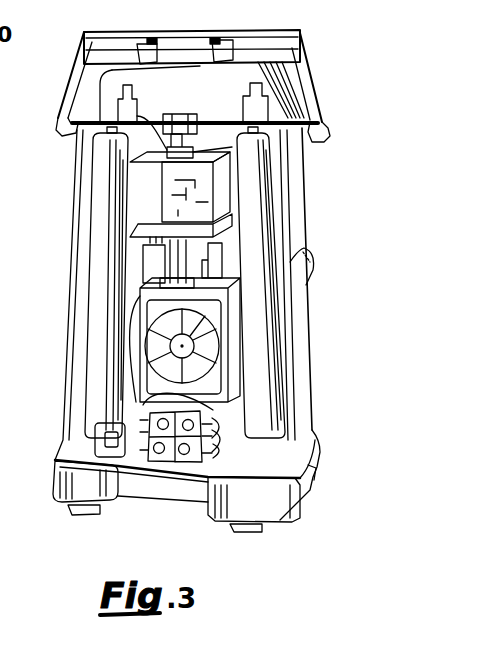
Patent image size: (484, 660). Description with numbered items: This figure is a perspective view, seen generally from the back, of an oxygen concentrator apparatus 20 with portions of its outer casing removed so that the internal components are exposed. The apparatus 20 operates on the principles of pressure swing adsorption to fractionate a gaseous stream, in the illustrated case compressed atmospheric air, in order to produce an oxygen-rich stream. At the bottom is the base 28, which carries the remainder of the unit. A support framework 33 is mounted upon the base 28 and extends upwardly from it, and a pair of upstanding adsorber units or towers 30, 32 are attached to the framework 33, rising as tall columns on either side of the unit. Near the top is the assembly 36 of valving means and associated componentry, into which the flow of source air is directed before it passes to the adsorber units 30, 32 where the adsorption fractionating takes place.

The apparatus 20 is at (322, 57).
The base 28 is at (312, 457).
The adsorber unit 30 is at (249, 202).
The adsorber unit 32 is at (102, 178).
The support framework 33 is at (314, 267).
The assembly of valving means and associated componentry 36 is at (88, 92).